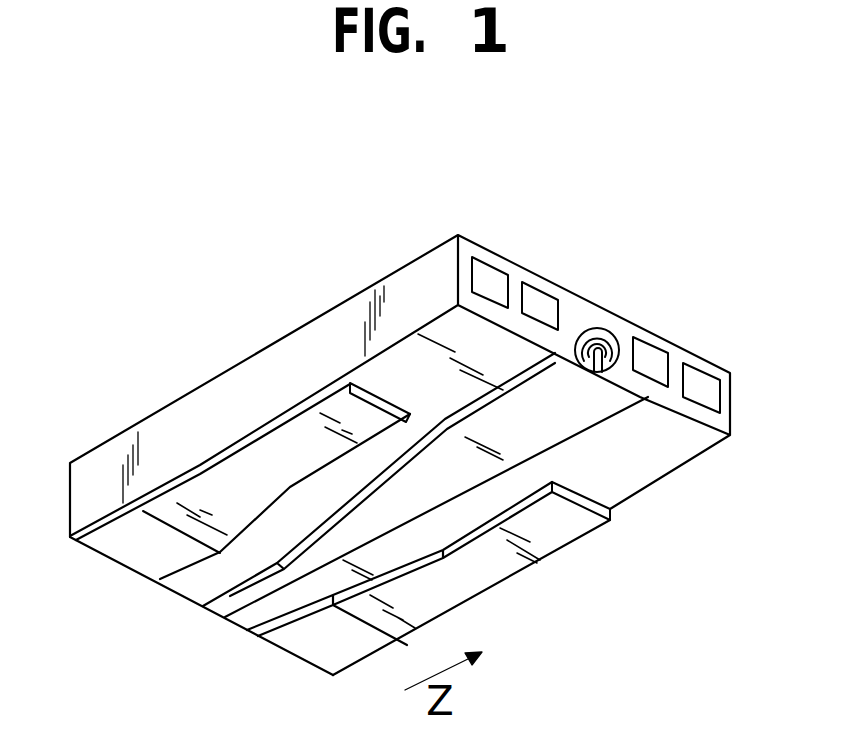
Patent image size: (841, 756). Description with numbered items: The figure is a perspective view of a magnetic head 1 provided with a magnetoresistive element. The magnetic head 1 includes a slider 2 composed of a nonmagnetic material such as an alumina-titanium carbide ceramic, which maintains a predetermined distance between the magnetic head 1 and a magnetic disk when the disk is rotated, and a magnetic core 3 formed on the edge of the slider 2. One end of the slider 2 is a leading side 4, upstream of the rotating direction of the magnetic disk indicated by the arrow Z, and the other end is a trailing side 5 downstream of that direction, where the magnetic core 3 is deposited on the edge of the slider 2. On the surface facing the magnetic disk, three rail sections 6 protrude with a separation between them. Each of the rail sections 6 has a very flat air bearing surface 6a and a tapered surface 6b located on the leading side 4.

The magnetic head 1 is at (362, 271).
The slider 2 is at (337, 352).
The magnetic core 3 is at (620, 316).
The leading side 4 is at (173, 608).
The trailing side 5 is at (570, 264).
The rail sections 6 is at (275, 428).
The air bearing surface 6a is at (222, 495).
The tapered surface 6b is at (137, 549).